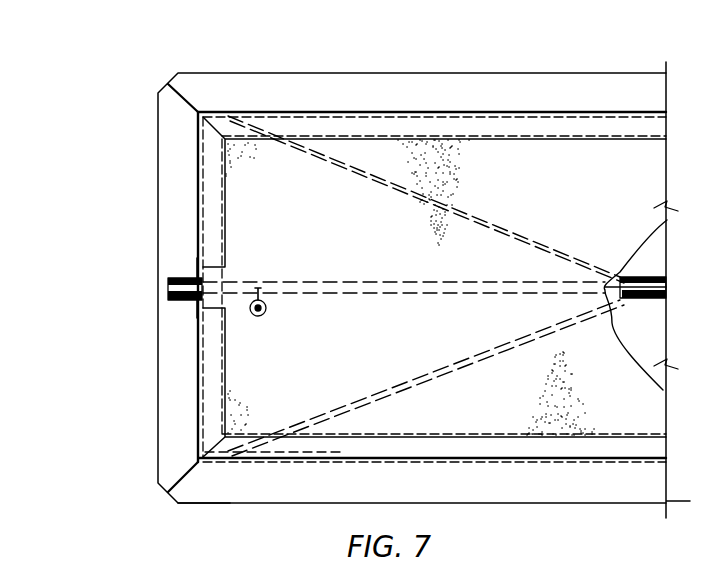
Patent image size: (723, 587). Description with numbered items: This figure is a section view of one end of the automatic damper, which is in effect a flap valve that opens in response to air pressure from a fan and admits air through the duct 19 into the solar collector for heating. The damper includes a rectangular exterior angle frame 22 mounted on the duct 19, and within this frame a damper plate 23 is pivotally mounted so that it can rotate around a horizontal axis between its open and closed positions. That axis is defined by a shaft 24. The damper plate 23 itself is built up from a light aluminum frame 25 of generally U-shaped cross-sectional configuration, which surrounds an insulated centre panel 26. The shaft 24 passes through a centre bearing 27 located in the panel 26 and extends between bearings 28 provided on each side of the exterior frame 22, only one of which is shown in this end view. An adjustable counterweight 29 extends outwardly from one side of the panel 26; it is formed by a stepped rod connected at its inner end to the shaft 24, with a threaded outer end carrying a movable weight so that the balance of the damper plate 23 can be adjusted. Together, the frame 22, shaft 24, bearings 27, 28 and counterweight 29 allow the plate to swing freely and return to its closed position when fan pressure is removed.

The duct 19 is at (550, 112).
The rectangular exterior angle frame 22 is at (515, 90).
The damper plate 23 is at (197, 420).
The shaft 24 is at (180, 302).
The light aluminum frame 25 is at (313, 128).
The insulated centre panel 26 is at (253, 169).
The centre bearing 27 is at (630, 303).
The bearing 28 is at (183, 278).
The adjustable counterweight 29 is at (266, 300).